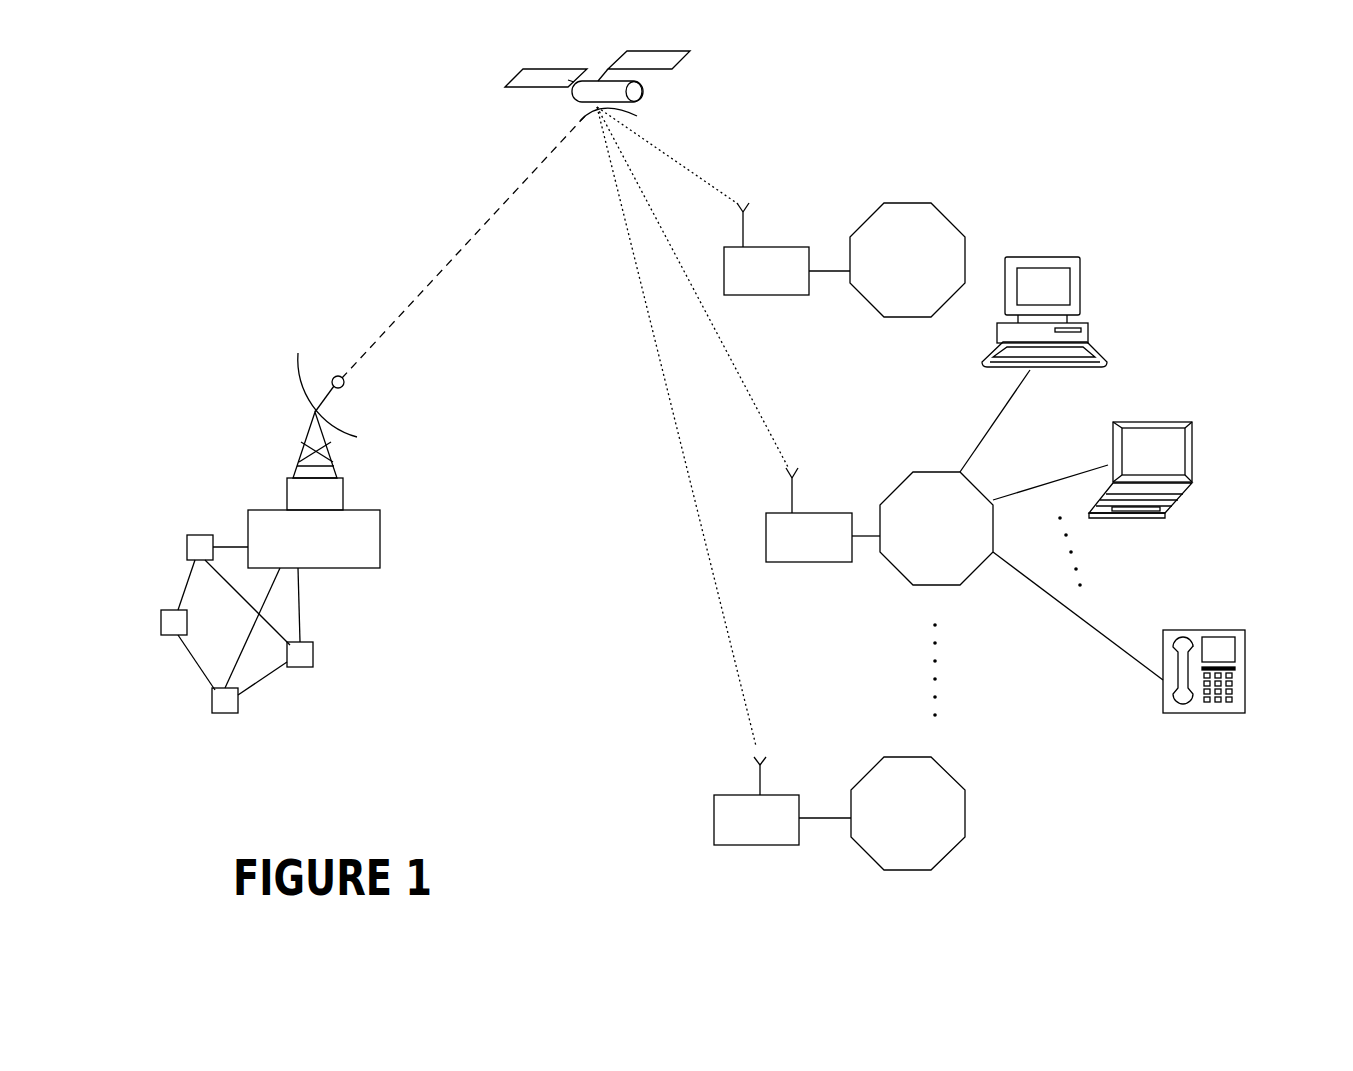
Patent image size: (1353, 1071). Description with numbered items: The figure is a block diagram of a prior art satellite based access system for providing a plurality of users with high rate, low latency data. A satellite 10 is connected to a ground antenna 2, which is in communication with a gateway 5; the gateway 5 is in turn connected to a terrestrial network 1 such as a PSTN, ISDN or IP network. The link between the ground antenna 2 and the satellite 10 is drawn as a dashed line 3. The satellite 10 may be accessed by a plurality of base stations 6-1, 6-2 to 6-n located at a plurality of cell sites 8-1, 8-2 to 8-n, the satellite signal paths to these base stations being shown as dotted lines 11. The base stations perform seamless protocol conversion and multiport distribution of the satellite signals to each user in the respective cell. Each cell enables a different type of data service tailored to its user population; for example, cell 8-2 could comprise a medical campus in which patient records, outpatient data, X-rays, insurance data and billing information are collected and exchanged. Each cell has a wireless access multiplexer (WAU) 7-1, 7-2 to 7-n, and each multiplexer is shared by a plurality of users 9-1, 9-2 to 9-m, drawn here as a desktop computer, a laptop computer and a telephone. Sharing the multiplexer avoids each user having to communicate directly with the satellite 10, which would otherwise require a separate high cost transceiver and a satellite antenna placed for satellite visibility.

The terrestrial network 1 is at (215, 635).
The ground antenna 2 is at (282, 478).
The feeder link 3 is at (418, 285).
The gateway 5 is at (383, 517).
The satellite 10 is at (527, 88).
The user links 11 is at (657, 355).
The base station 6-1 is at (740, 210).
The base station 6-2 is at (790, 497).
The base station 6-n is at (758, 780).
The wireless access multiplexer (WAU) 7-1 is at (776, 248).
The wireless access multiplexer (WAU) 7-2 is at (810, 557).
The wireless access multiplexer (WAU) 7-n is at (738, 845).
The cell site 8-1 is at (885, 288).
The cell site 8-2 is at (1007, 543).
The cell site 8-n is at (880, 836).
The user 9-1 is at (1048, 257).
The user 9-2 is at (1158, 422).
The user 9-m is at (1218, 707).